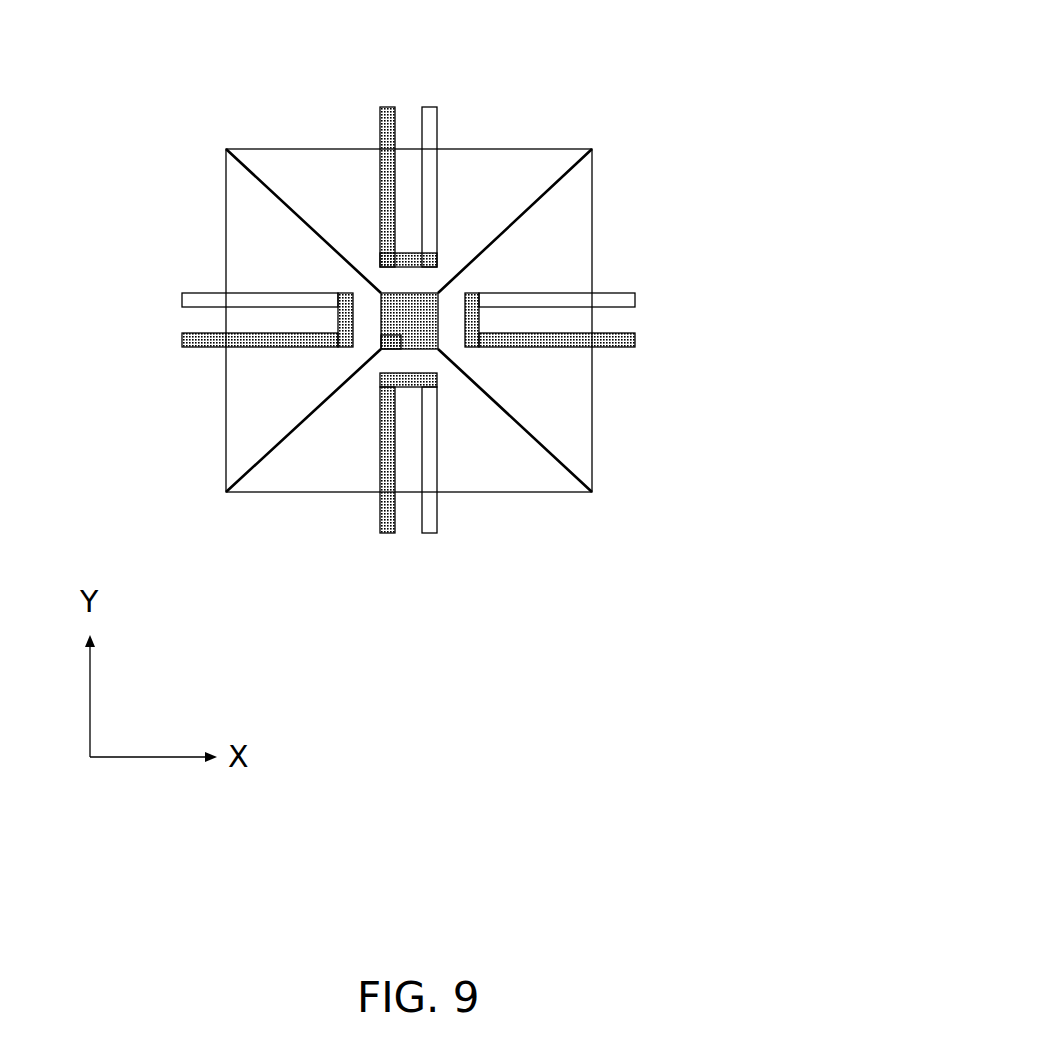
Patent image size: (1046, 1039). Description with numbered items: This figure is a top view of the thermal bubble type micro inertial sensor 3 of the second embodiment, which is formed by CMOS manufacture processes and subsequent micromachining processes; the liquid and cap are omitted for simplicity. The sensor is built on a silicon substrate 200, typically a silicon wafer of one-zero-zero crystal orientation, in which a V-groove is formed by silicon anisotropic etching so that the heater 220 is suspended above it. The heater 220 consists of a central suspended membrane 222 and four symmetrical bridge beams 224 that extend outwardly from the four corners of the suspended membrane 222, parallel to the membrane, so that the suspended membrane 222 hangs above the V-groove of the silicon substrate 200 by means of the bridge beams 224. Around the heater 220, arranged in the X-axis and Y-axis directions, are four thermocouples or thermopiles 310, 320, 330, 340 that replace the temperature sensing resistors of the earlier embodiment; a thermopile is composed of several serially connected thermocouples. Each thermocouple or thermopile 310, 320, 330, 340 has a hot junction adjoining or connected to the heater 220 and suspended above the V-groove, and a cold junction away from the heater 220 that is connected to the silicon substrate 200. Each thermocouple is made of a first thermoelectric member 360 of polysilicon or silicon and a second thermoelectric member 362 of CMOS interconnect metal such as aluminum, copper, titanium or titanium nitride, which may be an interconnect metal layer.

The thermal bubble type micro inertial sensor 3 is at (618, 88).
The silicon substrate 200 is at (543, 475).
The heater 220 is at (444, 305).
The suspended membrane 222 is at (386, 340).
The bridge beams 224 is at (260, 188).
The thermocouple/thermopile 310 is at (620, 302).
The thermocouple/thermopile 320 is at (197, 327).
The thermocouple/thermopile 330 is at (400, 122).
The thermocouple/thermopile 340 is at (400, 513).
The first thermoelectric member 360 is at (283, 298).
The second thermoelectric member 362 is at (253, 342).